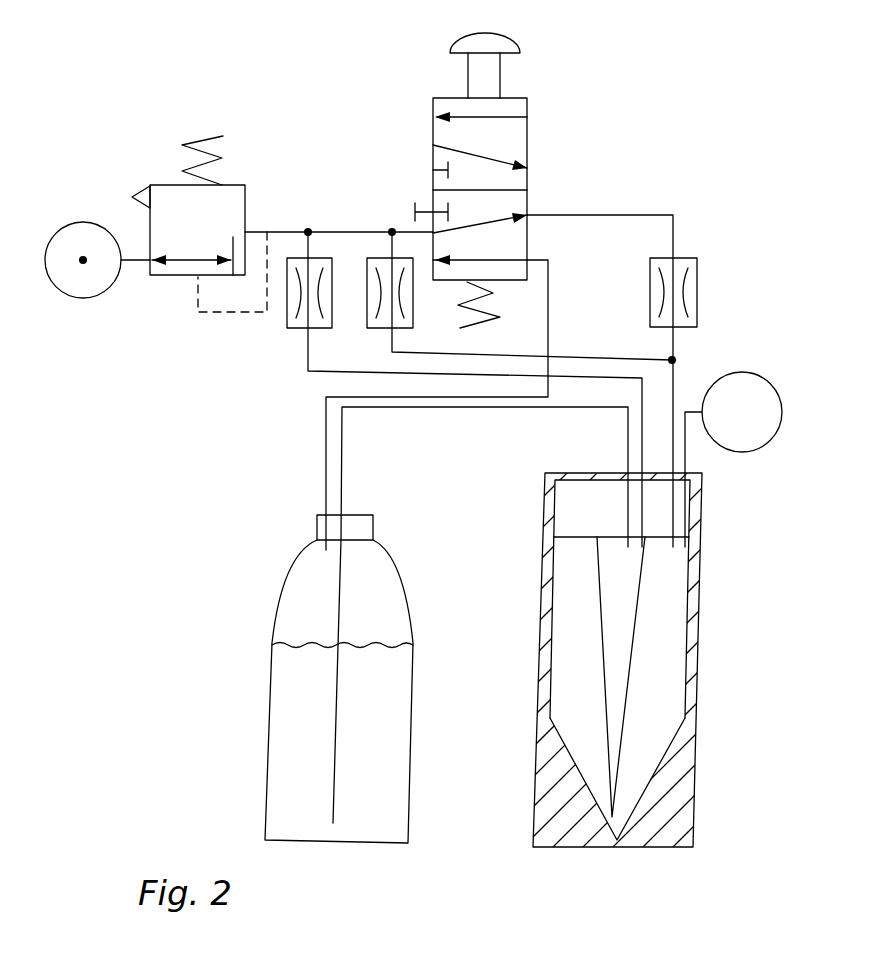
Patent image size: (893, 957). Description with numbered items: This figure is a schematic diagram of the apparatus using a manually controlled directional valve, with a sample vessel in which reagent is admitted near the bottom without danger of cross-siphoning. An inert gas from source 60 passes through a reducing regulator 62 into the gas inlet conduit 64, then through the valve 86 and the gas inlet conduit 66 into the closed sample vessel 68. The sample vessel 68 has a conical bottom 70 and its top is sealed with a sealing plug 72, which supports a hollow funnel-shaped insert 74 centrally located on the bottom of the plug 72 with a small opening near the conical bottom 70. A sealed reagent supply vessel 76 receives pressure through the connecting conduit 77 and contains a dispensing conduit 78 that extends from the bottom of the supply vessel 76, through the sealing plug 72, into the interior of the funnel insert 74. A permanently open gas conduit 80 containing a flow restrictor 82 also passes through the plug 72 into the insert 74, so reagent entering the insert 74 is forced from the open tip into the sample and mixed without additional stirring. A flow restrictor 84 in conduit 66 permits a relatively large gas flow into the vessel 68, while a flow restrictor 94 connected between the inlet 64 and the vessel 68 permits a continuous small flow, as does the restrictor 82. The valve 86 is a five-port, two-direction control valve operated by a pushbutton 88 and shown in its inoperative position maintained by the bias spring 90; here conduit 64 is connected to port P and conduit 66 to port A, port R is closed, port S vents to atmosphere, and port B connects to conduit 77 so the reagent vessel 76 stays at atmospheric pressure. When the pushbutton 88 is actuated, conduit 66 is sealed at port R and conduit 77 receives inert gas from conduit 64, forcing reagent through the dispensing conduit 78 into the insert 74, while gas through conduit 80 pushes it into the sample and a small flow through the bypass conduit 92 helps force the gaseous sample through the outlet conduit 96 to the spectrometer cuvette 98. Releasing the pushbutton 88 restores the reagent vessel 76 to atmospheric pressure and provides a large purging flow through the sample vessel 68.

The inert gas source 60 is at (99, 294).
The reducing regulator 62 is at (238, 199).
The gas inlet conduit 64 is at (300, 228).
The gas inlet conduit 66 is at (601, 216).
The sample vessel 68 is at (700, 600).
The conical bottom 70 is at (668, 764).
The sealing plug 72 is at (586, 490).
The funnel-shaped insert 74 is at (598, 628).
The reagent supply vessel 76 is at (409, 598).
The connecting conduit 77 is at (549, 308).
The dispensing conduit 78 is at (348, 418).
The gas conduit 80 is at (306, 358).
The flow restrictor 82 is at (327, 273).
The flow restrictor 84 is at (698, 264).
The control valve 86 is at (531, 152).
The pushbutton 88 is at (510, 45).
The bias spring 90 is at (493, 293).
The bypass conduit 92 is at (507, 352).
The flow restrictor 94 is at (410, 322).
The outlet conduit 96 is at (686, 455).
The spectrometer cuvette 98 is at (748, 373).